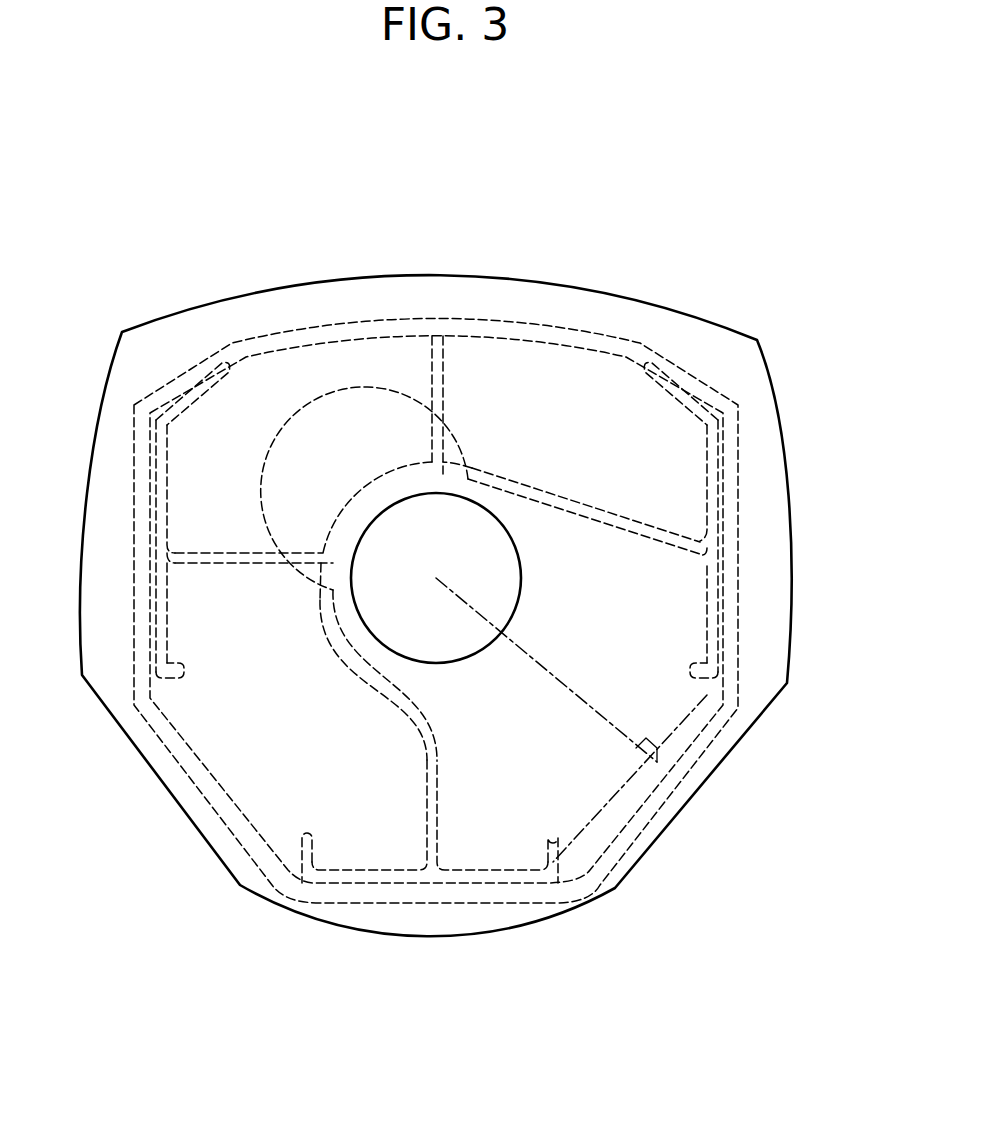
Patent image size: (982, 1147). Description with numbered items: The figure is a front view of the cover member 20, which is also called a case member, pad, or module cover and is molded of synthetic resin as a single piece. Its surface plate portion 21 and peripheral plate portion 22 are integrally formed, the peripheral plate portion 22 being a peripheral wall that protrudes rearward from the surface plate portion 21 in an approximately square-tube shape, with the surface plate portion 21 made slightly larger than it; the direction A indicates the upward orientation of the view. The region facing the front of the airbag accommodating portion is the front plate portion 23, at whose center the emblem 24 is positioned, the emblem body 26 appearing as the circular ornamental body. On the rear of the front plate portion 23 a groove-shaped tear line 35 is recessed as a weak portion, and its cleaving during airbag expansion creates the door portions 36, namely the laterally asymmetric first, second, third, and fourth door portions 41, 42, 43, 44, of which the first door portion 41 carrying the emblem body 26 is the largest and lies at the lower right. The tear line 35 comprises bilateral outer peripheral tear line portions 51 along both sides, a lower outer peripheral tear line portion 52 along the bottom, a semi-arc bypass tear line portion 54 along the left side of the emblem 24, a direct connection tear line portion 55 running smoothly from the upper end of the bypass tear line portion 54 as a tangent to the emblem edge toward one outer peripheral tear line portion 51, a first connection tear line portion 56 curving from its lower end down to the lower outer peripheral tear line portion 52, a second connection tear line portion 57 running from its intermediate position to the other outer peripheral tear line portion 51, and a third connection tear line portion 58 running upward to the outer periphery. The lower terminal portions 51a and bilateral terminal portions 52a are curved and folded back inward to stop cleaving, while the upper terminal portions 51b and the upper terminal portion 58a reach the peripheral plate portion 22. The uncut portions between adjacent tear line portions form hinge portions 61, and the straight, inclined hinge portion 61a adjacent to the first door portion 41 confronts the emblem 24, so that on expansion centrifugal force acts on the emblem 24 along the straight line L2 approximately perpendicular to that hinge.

The cover member 20 is at (127, 202).
The direction A is at (443, 147).
The surface plate portion 21 is at (608, 365).
The peripheral plate portion 22 is at (712, 393).
The front plate portion 23 is at (537, 360).
The emblem 24 is at (357, 617).
The emblem body 26 is at (519, 562).
The tear line 35 is at (667, 530).
The door portions 36 is at (473, 855).
The first door portion 41 is at (505, 855).
The second door portion 42 is at (210, 725).
The third door portion 43 is at (300, 370).
The fourth door portion 44 is at (573, 363).
The outer peripheral tear line portion 51 is at (152, 618).
The lower terminal portion 51a is at (177, 670).
The upper terminal portion 51b is at (229, 359).
The lower outer peripheral tear line portion 52 is at (533, 878).
The bilateral terminal portion 52a is at (312, 838).
The bypass tear line portion 54 is at (353, 663).
The direct connection tear line portion 55 is at (625, 518).
The first connection tear line portion 56 is at (427, 783).
The second connection tear line portion 57 is at (190, 548).
The third connection tear line portion 58 is at (443, 353).
The upper terminal portion 58a is at (433, 348).
The hinge portion 61 is at (365, 345).
The hinge portion 61a is at (672, 732).
The straight line L2 is at (546, 670).